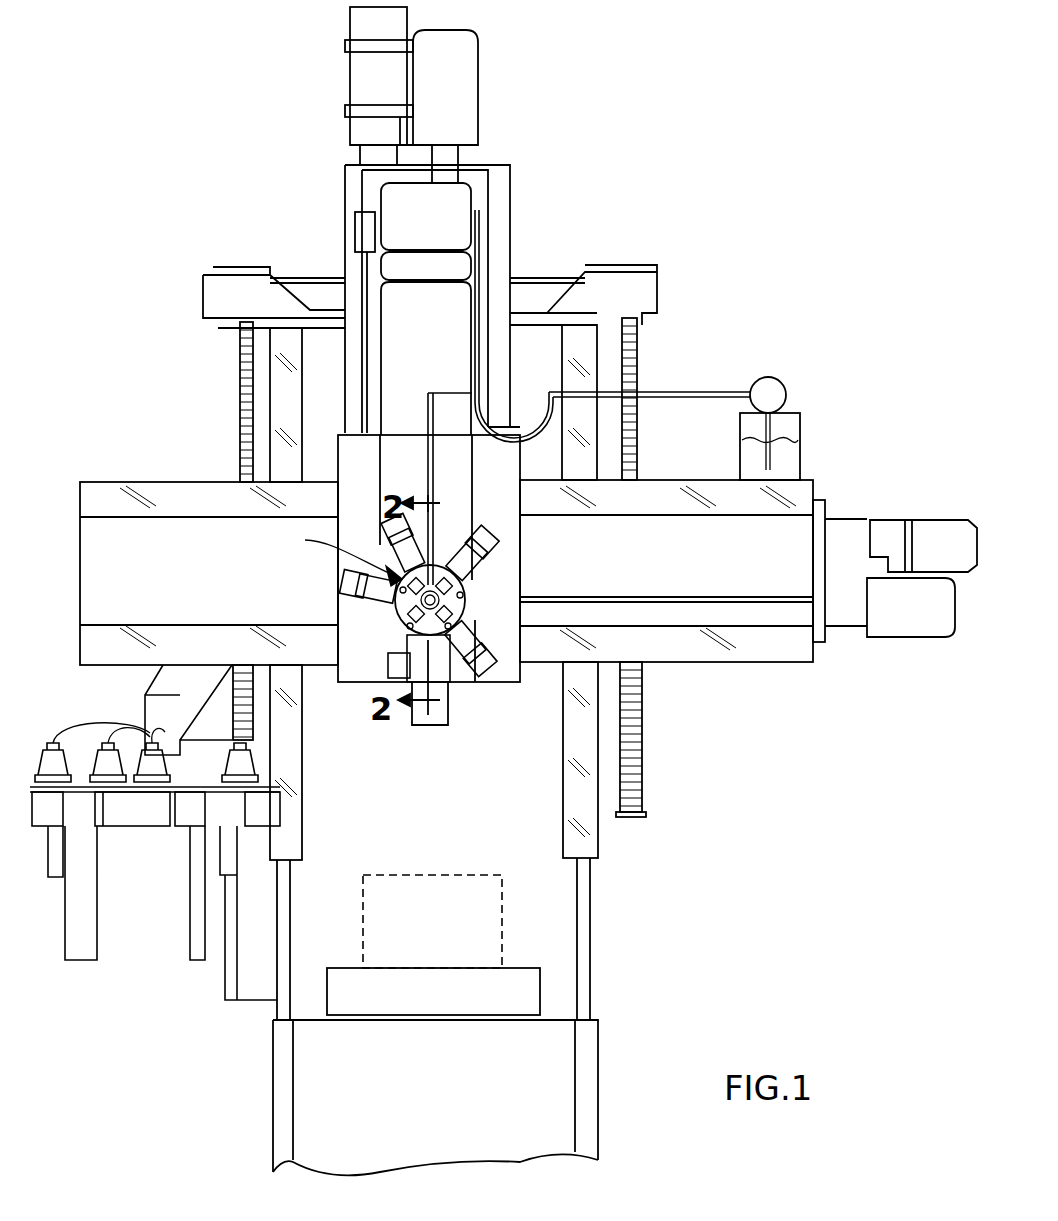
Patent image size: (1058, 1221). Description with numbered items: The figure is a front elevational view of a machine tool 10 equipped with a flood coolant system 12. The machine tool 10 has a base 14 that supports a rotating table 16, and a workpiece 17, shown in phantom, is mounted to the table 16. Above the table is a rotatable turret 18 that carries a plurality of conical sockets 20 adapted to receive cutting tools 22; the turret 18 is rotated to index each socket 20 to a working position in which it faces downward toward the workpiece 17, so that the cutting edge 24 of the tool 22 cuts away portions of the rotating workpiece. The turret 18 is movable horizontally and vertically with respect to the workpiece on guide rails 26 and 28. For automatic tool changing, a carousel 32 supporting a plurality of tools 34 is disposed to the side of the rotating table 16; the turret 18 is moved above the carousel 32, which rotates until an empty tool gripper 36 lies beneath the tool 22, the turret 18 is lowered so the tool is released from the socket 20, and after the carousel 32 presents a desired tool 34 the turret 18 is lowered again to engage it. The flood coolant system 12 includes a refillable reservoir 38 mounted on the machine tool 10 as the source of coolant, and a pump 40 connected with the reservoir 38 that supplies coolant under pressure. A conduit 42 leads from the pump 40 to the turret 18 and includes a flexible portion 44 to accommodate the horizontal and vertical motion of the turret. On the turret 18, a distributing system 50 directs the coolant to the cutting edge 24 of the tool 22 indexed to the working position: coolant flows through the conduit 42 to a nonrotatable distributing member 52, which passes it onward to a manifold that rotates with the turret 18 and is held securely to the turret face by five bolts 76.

The machine tool 10 is at (665, 197).
The flood coolant system 12 is at (724, 370).
The base 14 is at (600, 1072).
The rotating table 16 is at (537, 968).
The workpiece 17 is at (460, 875).
The rotatable turret 18 is at (520, 598).
The conical sockets 20 is at (385, 528).
The cutting tools 22 is at (484, 508).
The cutting edge 24 is at (488, 488).
The guide rail 26 is at (372, 344).
The guide rail 28 is at (708, 500).
The carousel 32 is at (143, 788).
The tools 34 is at (78, 712).
The tool gripper 36 is at (182, 820).
The refillable reservoir 38 is at (800, 448).
The pump 40 is at (786, 382).
The conduit 42 is at (652, 392).
The flexible portion 44 is at (548, 428).
The distributing system 50 is at (340, 558).
The nonrotatable distributing member 52 is at (436, 588).
The bolts 76 is at (372, 578).